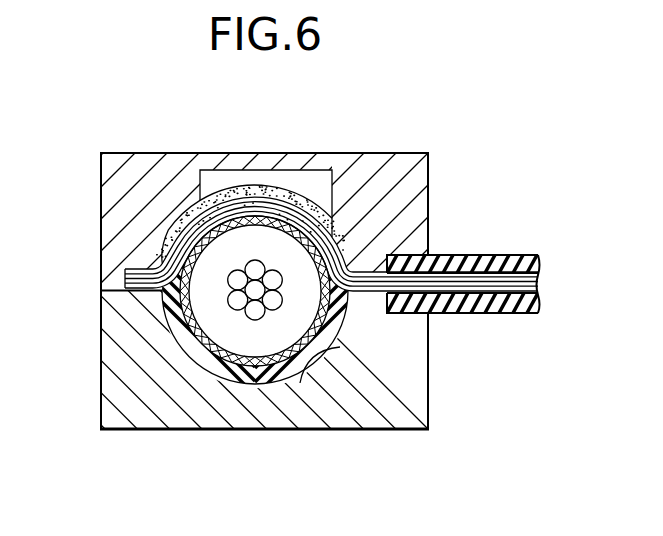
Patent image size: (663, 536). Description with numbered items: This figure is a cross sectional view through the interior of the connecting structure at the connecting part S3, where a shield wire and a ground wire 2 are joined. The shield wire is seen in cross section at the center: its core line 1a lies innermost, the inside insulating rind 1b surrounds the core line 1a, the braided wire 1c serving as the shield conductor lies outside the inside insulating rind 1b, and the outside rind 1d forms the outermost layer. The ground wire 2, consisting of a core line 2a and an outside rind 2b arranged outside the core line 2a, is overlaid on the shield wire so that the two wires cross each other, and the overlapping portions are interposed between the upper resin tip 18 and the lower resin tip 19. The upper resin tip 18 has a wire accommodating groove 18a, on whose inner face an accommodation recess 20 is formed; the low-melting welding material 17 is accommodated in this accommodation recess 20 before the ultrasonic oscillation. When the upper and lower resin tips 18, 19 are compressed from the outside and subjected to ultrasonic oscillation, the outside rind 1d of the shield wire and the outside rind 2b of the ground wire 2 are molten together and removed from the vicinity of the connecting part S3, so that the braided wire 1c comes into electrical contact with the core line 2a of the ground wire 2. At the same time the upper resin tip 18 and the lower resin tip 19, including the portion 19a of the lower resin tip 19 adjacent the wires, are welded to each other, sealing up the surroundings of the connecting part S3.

The conductor strands 1a is at (254, 313).
The insulating layer 1b is at (213, 332).
The braided wire 1c is at (280, 354).
The outside rind 1d is at (172, 323).
The ground wire 2 is at (507, 255).
The core line 2a is at (455, 265).
The outside rind 2b is at (475, 313).
The low-melting welding material 17 is at (258, 207).
The upper resin tip 18 is at (372, 165).
The wire accommodating groove 18a is at (152, 268).
The lower resin tip 19 is at (397, 415).
The lip of lower housing member 19a is at (317, 355).
The accommodation recess 20 is at (315, 180).
The connecting part S3 is at (352, 216).